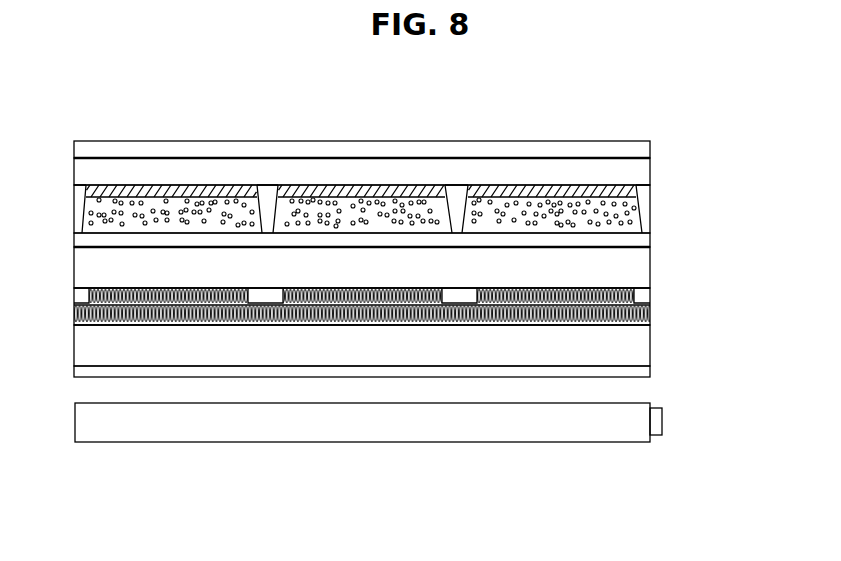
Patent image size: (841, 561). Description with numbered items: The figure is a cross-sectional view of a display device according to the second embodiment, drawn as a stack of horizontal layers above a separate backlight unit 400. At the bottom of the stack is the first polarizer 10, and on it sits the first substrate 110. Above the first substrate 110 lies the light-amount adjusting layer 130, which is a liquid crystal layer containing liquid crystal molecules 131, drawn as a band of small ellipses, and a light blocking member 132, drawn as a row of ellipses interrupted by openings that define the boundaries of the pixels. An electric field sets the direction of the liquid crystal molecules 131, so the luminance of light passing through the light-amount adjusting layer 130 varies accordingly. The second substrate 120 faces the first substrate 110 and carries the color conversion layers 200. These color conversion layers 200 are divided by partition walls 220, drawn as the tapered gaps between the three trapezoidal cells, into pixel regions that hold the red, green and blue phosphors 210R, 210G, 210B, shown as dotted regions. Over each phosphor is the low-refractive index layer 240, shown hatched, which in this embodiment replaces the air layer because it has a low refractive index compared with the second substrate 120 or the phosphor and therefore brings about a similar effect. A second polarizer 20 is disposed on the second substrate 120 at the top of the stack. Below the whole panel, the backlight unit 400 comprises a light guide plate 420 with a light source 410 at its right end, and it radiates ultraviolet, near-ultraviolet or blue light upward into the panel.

The first polarizer 10 is at (638, 372).
The second polarizer 20 is at (638, 149).
The first substrate 110 is at (638, 345).
The second substrate 120 is at (636, 170).
The light-amount adjusting layer 130 is at (713, 293).
The liquid crystal molecules 131 is at (645, 316).
The light blocking member 132 is at (640, 296).
The color conversion layers 200 is at (661, 186).
The red phosphor 210R is at (204, 206).
The green phosphor 210G is at (325, 206).
The blue phosphor 210B is at (519, 205).
The partition walls 220 is at (458, 209).
The low-refractive index layer 240 is at (393, 192).
The backlight unit 400 is at (655, 498).
The light source 410 is at (657, 434).
The light guide plate 420 is at (606, 432).